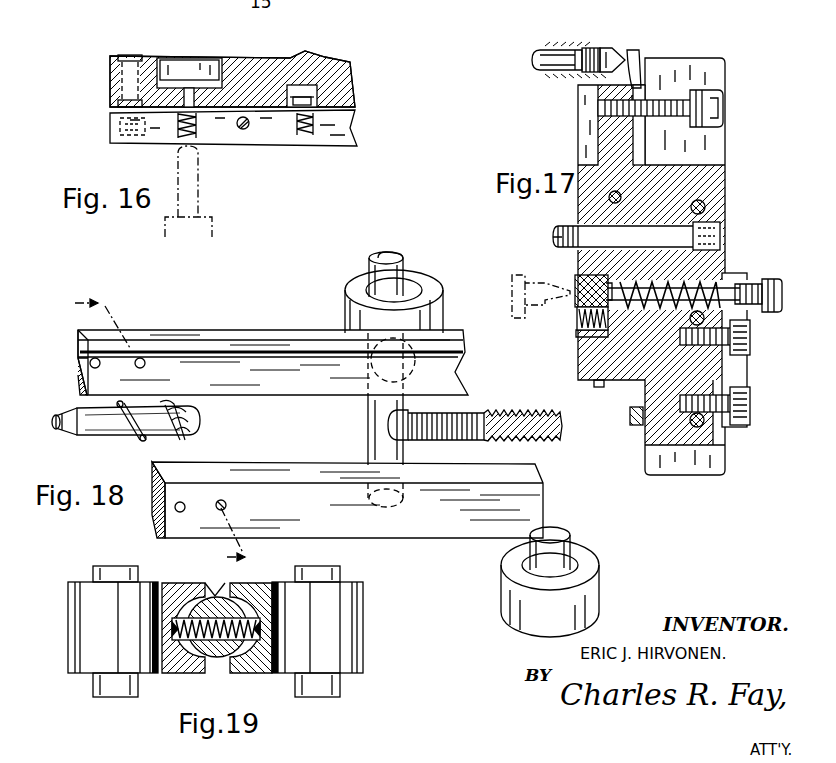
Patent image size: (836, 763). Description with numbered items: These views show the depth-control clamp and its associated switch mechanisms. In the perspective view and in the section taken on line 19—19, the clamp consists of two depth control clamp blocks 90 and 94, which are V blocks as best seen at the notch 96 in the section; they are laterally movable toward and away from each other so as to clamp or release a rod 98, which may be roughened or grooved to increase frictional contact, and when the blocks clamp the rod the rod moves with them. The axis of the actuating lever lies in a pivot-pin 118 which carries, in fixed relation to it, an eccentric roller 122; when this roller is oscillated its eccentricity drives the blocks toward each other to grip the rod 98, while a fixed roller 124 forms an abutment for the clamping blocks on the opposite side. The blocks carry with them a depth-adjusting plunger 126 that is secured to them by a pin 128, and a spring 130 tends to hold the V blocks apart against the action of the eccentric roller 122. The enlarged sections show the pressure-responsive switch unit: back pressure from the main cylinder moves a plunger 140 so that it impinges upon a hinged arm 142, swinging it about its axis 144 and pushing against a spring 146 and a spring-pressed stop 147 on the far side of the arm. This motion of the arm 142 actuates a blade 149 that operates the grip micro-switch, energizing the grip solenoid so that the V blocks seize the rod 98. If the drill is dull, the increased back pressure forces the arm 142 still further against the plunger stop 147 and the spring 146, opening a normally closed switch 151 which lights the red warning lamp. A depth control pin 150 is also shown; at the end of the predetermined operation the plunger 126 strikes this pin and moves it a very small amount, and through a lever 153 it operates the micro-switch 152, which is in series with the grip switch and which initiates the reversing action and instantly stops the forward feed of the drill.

In FIG. 18, the section line 19 is at (158, 423).
In FIG. 18, the depth control clamp block 90 is at (437, 538).
In FIG. 19, the depth control clamp block 90 is at (255, 673).
In FIG. 18, the depth control clamp block 94 is at (257, 333).
In FIG. 19, the depth control clamp block 94 is at (190, 673).
In FIG. 19, the V block notch 96 is at (224, 581).
In FIG. 18, the rod 98 is at (505, 414).
In FIG. 18, the pivot-pin 118 is at (364, 377).
In FIG. 18, the eccentric roller 122 is at (437, 316).
In FIG. 19, the eccentric roller 122 is at (68, 661).
In FIG. 18, the fixed roller 124 is at (600, 585).
In FIG. 19, the fixed roller 124 is at (363, 660).
In FIG. 18, the depth-adjusting plunger 126 is at (60, 414).
In FIG. 19, the depth-adjusting plunger 126 is at (250, 655).
In FIG. 18, the pin 128 is at (138, 440).
In FIG. 18, the spring 130 is at (185, 442).
In FIG. 19, the spring 130 is at (252, 612).
In FIG. 16, the plunger 140 is at (198, 191).
In FIG. 17, the plunger 140 is at (512, 282).
In FIG. 16, the hinged arm 142 is at (322, 136).
In FIG. 17, the hinged arm 142 is at (577, 333).
In FIG. 16, the axis 144 is at (248, 128).
In FIG. 17, the axis 144 is at (599, 388).
In FIG. 16, the spring 146 is at (110, 133).
In FIG. 17, the spring 146 is at (577, 316).
In FIG. 16, the stop 147 is at (128, 55).
In FIG. 17, the stop 147 is at (580, 290).
In FIG. 16, the blade 149 is at (315, 85).
In FIG. 17, the depth control pin 150 is at (536, 71).
In FIG. 16, the normally closed switch 151 is at (189, 68).
In FIG. 17, the micro-switch 152 is at (678, 66).
In FIG. 17, the lever 153 is at (636, 50).